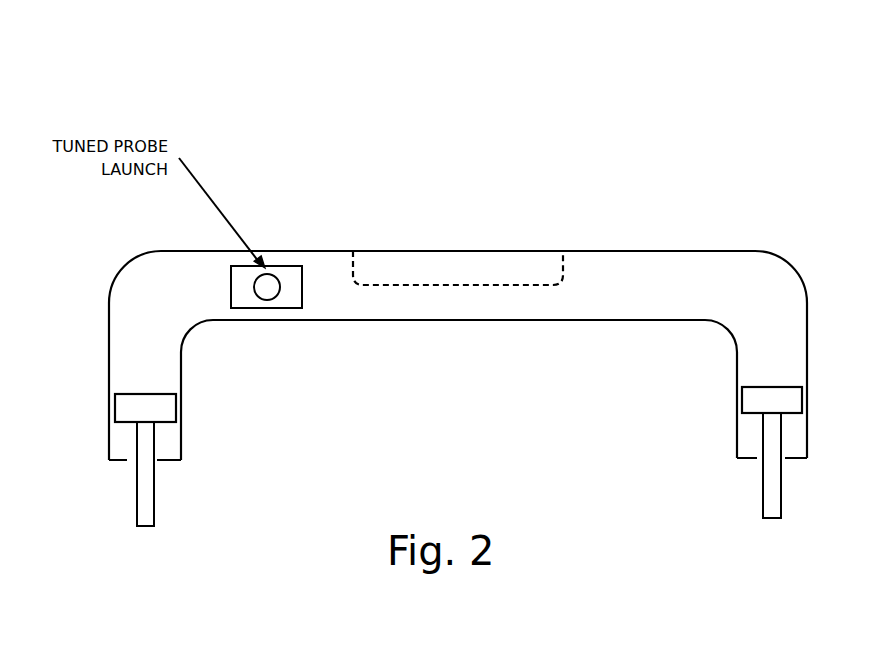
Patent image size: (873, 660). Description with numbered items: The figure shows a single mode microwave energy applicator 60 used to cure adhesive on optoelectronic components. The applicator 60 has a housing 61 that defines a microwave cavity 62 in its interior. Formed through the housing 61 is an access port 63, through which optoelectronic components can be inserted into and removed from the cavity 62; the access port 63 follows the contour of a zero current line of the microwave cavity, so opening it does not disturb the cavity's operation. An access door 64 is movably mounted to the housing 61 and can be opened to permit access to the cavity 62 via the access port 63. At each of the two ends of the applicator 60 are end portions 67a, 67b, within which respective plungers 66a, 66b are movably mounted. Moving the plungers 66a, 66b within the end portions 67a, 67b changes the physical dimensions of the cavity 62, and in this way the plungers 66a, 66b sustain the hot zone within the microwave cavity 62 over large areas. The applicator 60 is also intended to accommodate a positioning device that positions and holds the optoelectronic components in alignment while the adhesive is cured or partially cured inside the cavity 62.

The single mode microwave energy applicator 60 is at (684, 188).
The housing 61 is at (702, 249).
The microwave cavity 62 is at (590, 280).
The access port 63 is at (412, 272).
The access door 64 is at (527, 248).
The plunger 66a is at (145, 527).
The plunger 66b is at (773, 520).
The end portion 67a is at (182, 462).
The end portion 67b is at (735, 450).